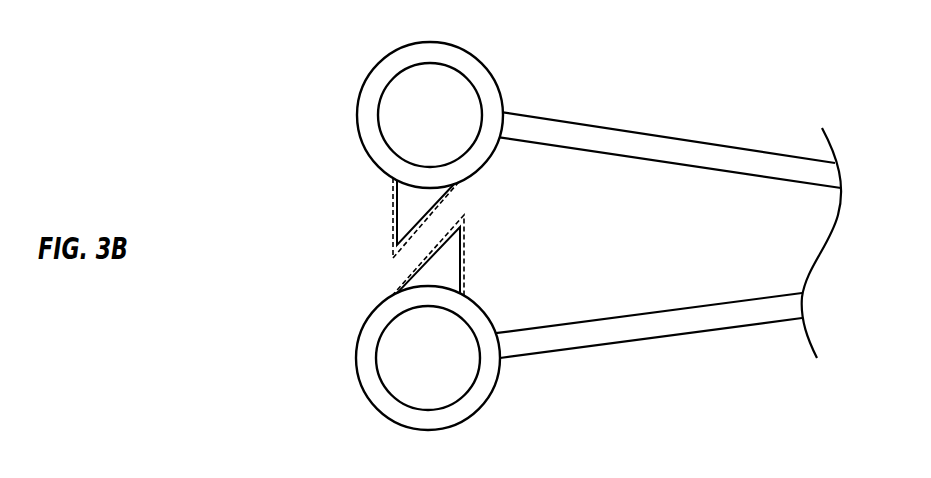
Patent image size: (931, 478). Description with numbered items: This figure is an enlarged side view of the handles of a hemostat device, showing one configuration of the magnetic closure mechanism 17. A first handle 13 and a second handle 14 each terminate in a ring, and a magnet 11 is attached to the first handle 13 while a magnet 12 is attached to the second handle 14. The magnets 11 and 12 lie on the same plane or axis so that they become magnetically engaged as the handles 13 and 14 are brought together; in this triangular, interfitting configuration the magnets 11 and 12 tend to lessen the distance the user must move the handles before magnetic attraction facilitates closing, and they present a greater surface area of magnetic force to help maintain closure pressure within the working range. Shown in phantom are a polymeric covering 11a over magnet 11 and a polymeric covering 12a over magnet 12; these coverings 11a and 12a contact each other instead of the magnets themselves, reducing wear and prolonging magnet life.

The magnet 11 is at (400, 190).
The polymeric covering 11a is at (392, 202).
The magnet 12 is at (443, 260).
The polymeric covering 12a is at (465, 255).
The first handle 13 is at (483, 63).
The second handle 14 is at (473, 410).
The magnetic closure mechanism 17 is at (328, 248).